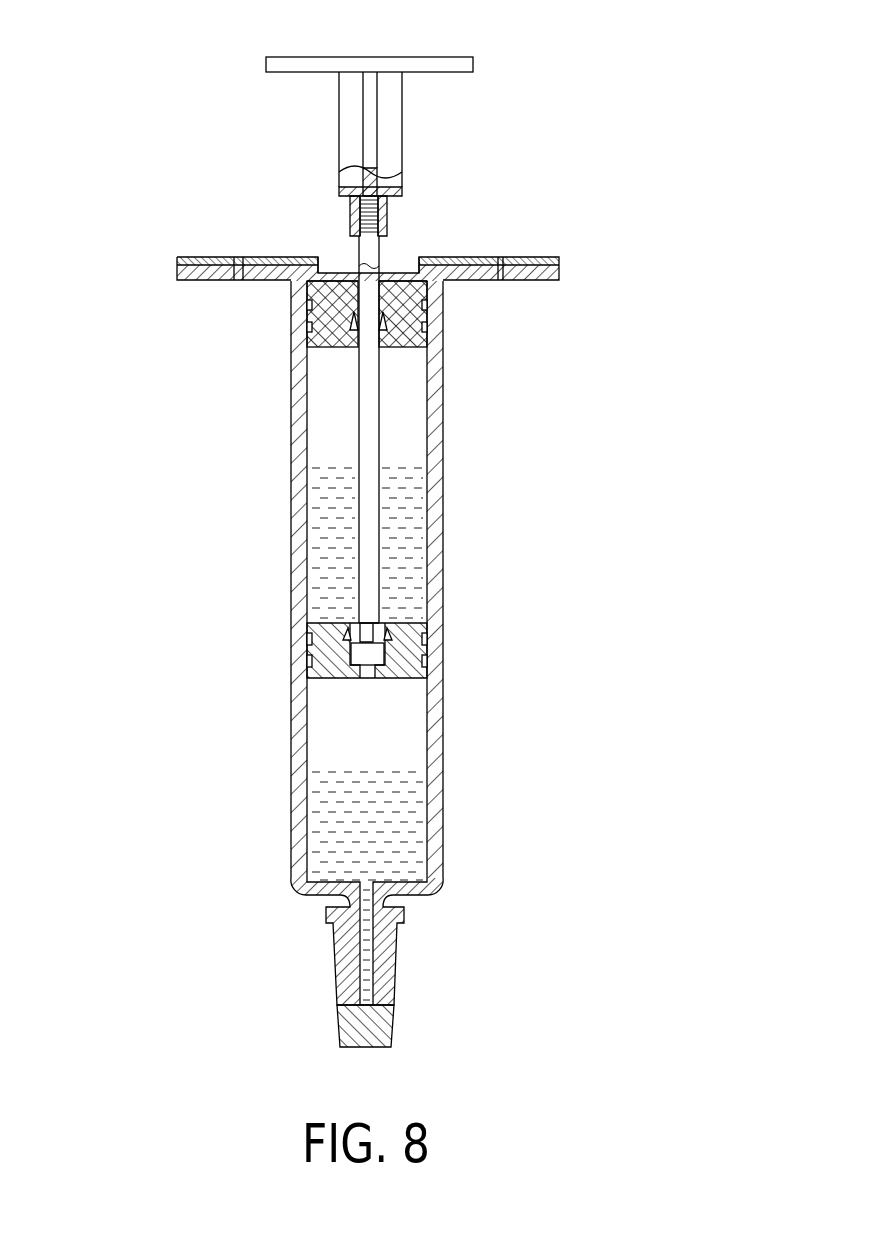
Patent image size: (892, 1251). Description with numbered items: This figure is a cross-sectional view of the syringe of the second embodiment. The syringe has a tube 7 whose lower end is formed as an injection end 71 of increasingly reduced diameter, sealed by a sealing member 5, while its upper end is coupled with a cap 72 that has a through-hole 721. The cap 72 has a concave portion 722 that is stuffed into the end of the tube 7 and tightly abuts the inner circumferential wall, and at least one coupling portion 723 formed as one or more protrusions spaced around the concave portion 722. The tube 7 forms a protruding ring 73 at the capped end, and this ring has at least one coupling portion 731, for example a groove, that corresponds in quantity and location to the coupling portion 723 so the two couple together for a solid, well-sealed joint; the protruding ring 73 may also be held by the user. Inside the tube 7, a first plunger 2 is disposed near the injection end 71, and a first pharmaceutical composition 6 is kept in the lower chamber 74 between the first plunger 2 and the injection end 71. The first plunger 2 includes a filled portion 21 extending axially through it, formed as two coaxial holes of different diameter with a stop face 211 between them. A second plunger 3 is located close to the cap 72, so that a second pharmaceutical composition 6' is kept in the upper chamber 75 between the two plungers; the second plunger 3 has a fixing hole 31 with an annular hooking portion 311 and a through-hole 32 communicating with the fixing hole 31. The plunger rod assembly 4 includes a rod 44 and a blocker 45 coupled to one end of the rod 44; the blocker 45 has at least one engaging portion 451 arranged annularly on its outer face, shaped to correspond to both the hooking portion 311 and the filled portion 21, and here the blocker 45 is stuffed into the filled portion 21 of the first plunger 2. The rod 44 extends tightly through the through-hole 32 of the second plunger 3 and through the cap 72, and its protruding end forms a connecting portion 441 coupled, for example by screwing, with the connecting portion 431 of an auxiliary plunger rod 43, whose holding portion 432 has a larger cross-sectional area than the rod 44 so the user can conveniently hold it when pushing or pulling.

The first plunger 2 is at (407, 677).
The filled portion 21 is at (313, 628).
The stop face 211 is at (347, 650).
The second plunger 3 is at (332, 343).
The fixing hole 31 is at (427, 337).
The hooking portion 311 is at (427, 318).
The through-hole 32 is at (427, 293).
The plunger rod assembly 4 is at (745, 271).
The auxiliary plunger rod 43 is at (395, 143).
The connecting portion 431 is at (350, 200).
The holding portion 432 is at (450, 62).
The rod 44 is at (369, 430).
The connecting portion 441 is at (300, 134).
The blocker 45 is at (370, 654).
The engaging portion 451 is at (387, 636).
The sealing member 5 is at (345, 1020).
The first pharmaceutical composition 6 is at (316, 826).
The second pharmaceutical composition 6' is at (319, 520).
The tube 7 is at (436, 730).
The injection end 71 is at (378, 945).
The cap 72 is at (177, 257).
The through-hole 721 is at (338, 258).
The concave portion 722 is at (398, 258).
The coupling portion 723 is at (232, 272).
The protruding ring 73 is at (198, 275).
The coupling portion 731 is at (298, 238).
The lower chamber 74 is at (323, 747).
The upper chamber 75 is at (310, 414).